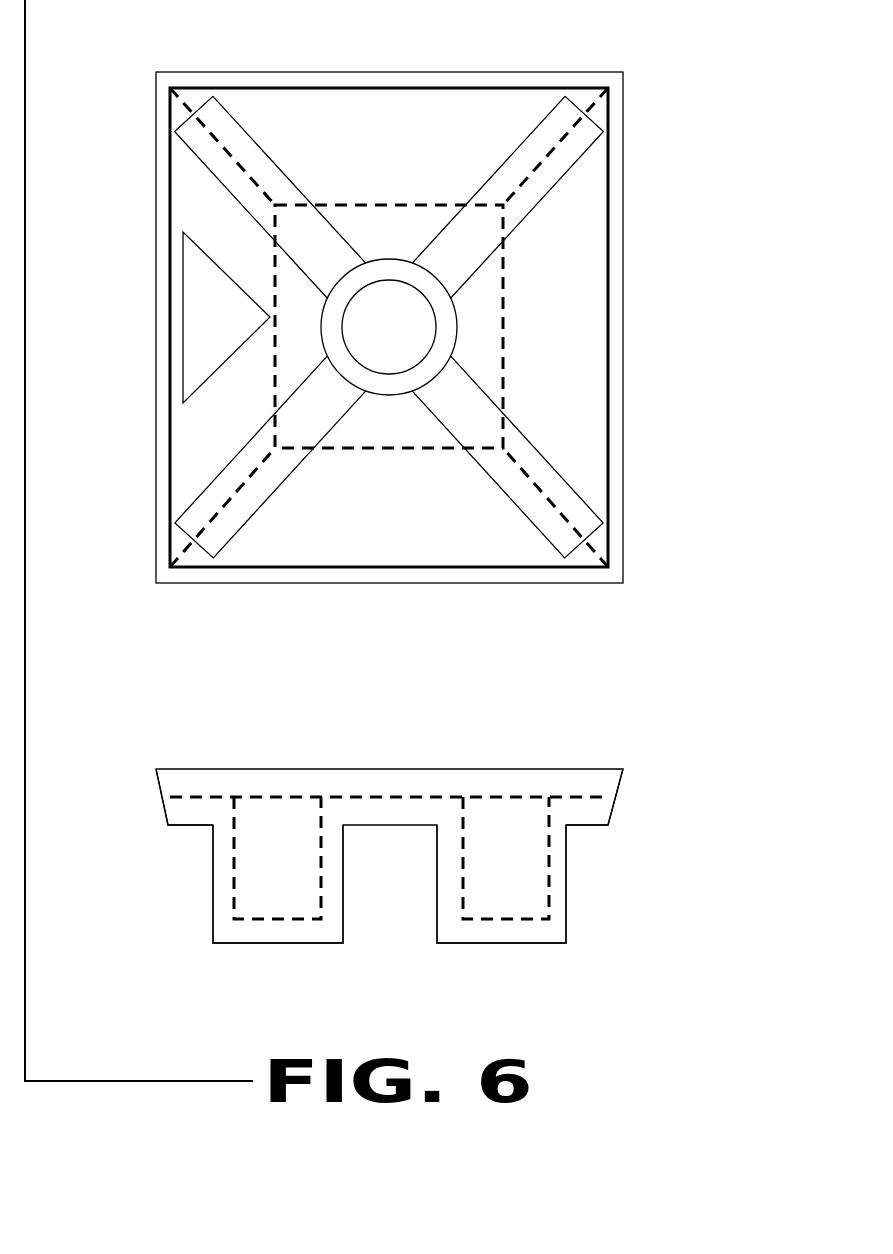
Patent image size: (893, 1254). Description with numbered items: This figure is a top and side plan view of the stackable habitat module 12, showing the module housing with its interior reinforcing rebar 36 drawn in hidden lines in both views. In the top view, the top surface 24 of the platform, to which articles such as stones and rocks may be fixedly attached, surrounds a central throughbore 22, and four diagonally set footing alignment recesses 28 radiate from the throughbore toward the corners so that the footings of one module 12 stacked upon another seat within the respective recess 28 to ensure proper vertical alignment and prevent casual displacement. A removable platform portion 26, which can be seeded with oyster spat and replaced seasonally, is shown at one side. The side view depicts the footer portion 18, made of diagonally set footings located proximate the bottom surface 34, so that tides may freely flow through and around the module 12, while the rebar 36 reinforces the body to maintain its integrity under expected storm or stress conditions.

The stackable habitat module 12 is at (680, 178).
The footer portion 18 is at (447, 902).
The throughbore 22 is at (350, 328).
The top surface 24 is at (428, 122).
The removable platform portion 26 is at (198, 302).
The footing alignment recesses 28 is at (463, 397).
The bottom surface 34 is at (590, 827).
The reinforcing rebar 36 is at (237, 495).